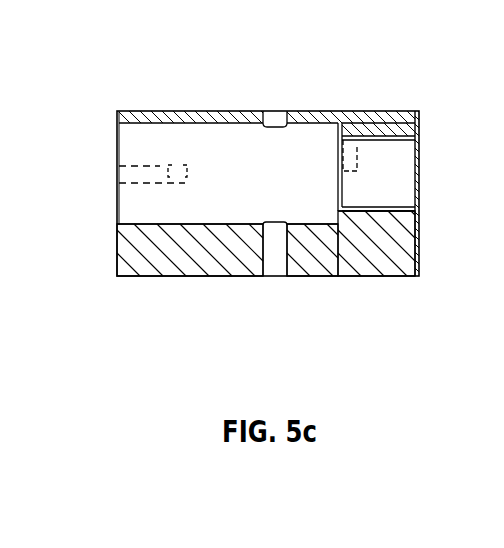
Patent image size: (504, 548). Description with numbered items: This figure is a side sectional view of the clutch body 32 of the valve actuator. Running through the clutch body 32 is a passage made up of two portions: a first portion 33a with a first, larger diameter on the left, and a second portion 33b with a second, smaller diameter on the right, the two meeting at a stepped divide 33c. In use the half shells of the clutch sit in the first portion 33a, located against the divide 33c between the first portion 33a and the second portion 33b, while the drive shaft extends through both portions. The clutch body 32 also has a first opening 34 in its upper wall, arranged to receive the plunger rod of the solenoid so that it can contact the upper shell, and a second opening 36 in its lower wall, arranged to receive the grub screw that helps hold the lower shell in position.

The clutch body 32 is at (153, 253).
The first portion of the passage 33a is at (132, 203).
The second portion of the passage 33b is at (405, 168).
The divide 33c is at (345, 218).
The first opening 34 is at (282, 110).
The second opening 36 is at (274, 262).